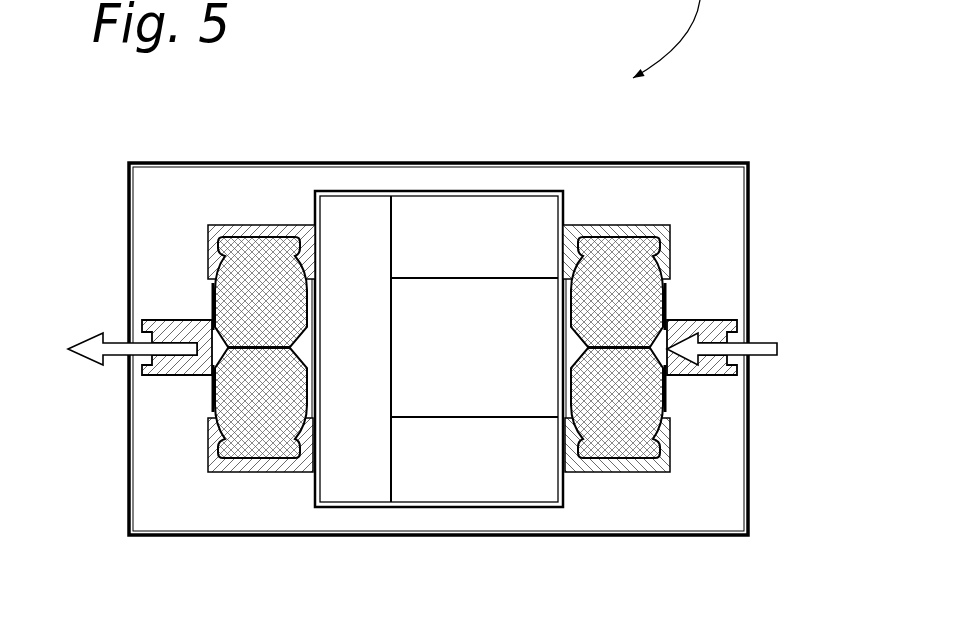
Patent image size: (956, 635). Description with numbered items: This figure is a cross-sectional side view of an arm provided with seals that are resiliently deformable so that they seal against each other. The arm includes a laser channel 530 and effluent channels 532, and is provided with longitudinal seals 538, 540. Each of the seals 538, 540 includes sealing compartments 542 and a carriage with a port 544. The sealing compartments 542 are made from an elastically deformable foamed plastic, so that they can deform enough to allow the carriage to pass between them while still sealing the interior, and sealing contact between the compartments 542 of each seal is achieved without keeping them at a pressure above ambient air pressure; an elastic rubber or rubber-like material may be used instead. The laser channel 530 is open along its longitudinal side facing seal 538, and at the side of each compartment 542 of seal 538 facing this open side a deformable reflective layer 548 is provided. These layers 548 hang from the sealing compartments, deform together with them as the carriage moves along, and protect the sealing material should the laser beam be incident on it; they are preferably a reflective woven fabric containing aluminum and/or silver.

The laser channel 530 is at (477, 370).
The effluent channels 532 is at (450, 233).
The longitudinal seal 538 is at (668, 313).
The longitudinal seal 540 is at (205, 310).
The sealing compartments 542 is at (253, 268).
The port 544 is at (170, 367).
The deformable reflective layer 548 is at (573, 370).